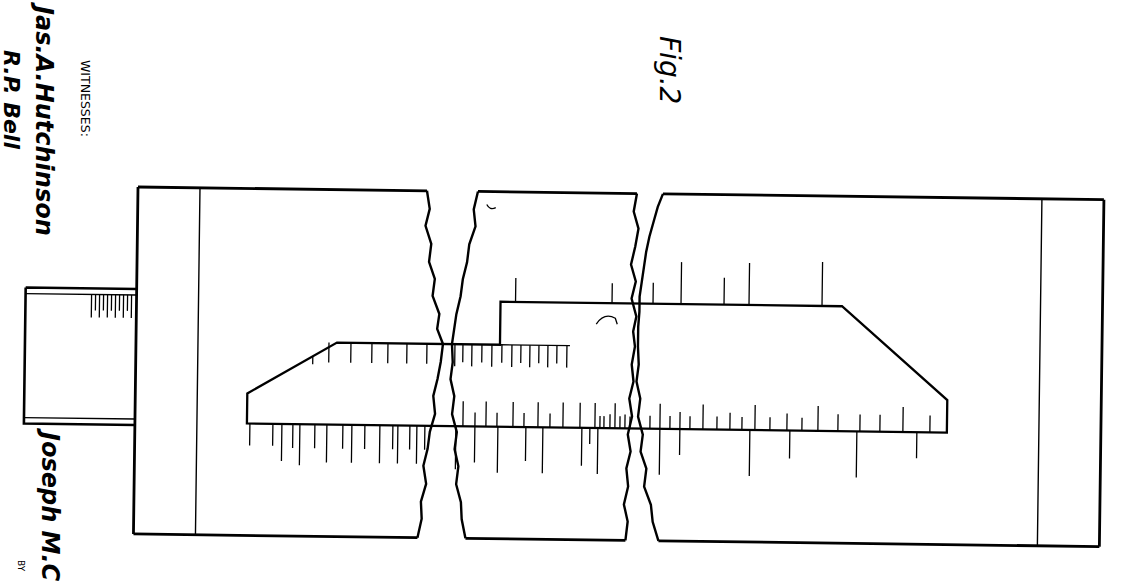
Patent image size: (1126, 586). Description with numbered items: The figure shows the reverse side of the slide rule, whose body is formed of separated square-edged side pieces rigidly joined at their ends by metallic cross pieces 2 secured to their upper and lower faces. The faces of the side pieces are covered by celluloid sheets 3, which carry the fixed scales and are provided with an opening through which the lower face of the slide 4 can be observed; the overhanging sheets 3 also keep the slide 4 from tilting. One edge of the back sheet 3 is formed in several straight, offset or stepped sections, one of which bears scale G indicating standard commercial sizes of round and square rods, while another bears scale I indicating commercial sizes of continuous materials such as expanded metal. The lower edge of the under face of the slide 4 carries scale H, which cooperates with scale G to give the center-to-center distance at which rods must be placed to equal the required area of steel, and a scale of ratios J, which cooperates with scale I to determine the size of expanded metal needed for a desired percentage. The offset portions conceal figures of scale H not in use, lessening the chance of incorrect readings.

The metallic cross piece 2 is at (554, 297).
The celluloid sheet 3 is at (402, 187).
The slide 4 is at (511, 365).
The scale of commercial rod sizes G is at (238, 431).
The scale of center-to-center distances H is at (849, 392).
The scale of continuous material sizes I is at (413, 340).
The scale of ratios J is at (315, 356).